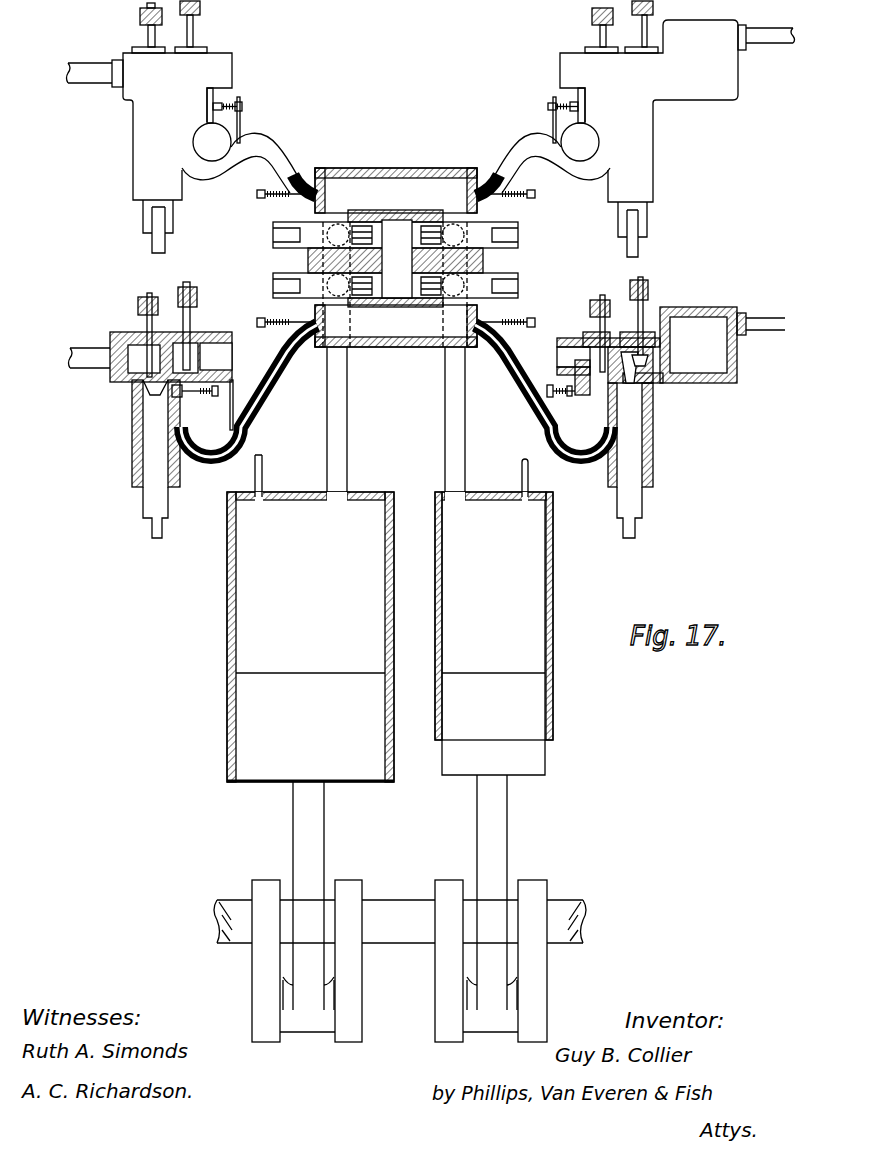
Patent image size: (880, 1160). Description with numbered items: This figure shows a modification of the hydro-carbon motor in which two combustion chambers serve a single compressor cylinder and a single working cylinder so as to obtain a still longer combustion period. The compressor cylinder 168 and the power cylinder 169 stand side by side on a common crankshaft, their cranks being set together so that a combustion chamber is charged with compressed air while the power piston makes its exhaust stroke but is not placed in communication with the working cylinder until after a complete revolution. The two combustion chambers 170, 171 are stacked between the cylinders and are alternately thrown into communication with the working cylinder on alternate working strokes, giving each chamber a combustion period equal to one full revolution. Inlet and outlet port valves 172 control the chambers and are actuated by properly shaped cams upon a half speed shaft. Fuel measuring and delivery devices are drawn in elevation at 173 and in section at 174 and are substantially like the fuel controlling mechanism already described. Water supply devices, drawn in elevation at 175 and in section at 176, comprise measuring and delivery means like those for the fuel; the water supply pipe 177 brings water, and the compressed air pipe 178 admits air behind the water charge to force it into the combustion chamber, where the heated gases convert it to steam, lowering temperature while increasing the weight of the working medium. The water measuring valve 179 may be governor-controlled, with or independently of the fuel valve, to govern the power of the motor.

The compressor cylinder 168 is at (494, 745).
The power cylinder 169 is at (310, 743).
The combustion chamber 170 is at (396, 195).
The combustion chamber 171 is at (396, 322).
The inlet and outlet port valves 172 is at (293, 242).
The fuel measuring and delivery device 173 is at (635, 129).
The fuel measuring and delivery device 174 is at (664, 308).
The water supply device 175 is at (192, 127).
The water supply device 176 is at (165, 337).
The water supply pipe 177 is at (72, 356).
The compressed air pipe 178 is at (226, 357).
The water measuring valve 179 is at (135, 388).